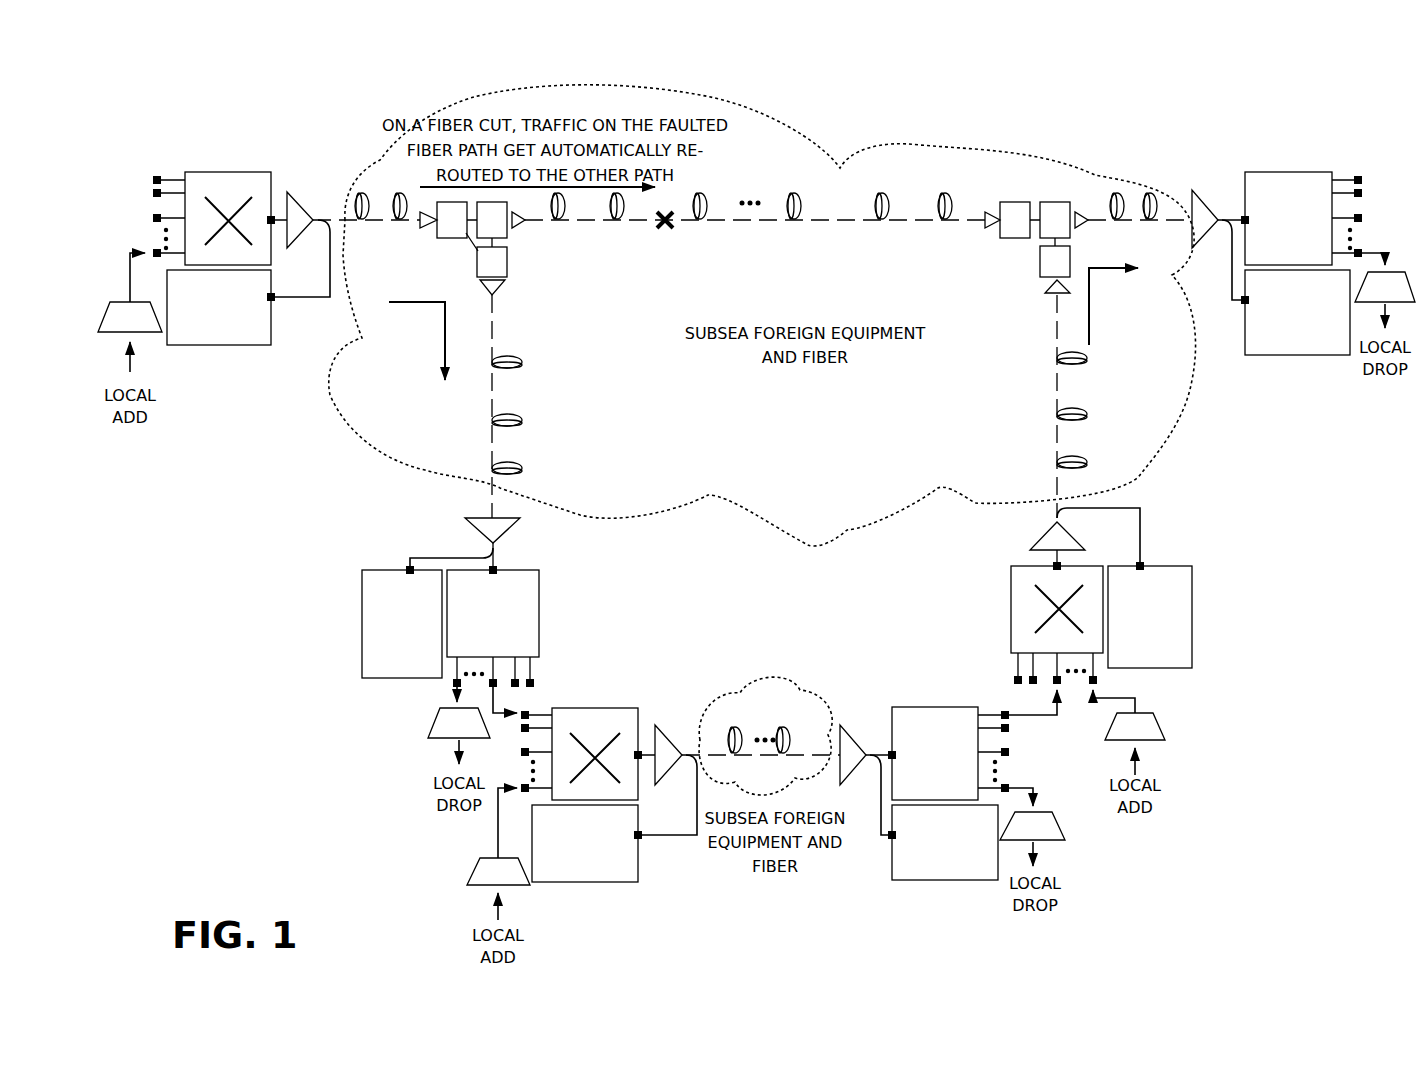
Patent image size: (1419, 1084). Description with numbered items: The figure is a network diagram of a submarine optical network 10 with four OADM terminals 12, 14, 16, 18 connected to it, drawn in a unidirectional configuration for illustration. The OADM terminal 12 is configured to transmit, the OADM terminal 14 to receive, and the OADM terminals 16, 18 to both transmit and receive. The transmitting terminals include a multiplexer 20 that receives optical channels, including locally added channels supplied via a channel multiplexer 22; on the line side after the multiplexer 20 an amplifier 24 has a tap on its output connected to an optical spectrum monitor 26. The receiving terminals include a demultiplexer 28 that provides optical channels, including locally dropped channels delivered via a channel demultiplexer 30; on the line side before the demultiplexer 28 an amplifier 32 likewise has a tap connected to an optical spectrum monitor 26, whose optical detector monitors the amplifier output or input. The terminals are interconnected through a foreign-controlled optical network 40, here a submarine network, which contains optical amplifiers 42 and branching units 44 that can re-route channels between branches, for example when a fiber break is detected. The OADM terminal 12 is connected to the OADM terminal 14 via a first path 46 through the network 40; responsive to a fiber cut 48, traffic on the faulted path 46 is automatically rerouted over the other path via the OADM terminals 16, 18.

The submarine optical network 10 is at (1115, 112).
The OADM terminal 12 is at (248, 143).
The OADM terminal 14 is at (1293, 132).
The OADM terminal 16 is at (332, 614).
The OADM terminal 18 is at (1258, 692).
The multiplexer 20 is at (272, 178).
The channel multiplexer 22 is at (115, 334).
The amplifier 24 is at (300, 202).
The optical spectrum monitor 26 is at (252, 347).
The demultiplexer 28 is at (1325, 172).
The channel demultiplexer 30 is at (1395, 270).
The amplifier 32 is at (1205, 190).
The foreign-controlled optical network 40 is at (960, 140).
The optical amplifier 42 is at (418, 225).
The branching unit 44 is at (460, 258).
The first path 46 is at (788, 237).
The fiber cut 48 is at (670, 226).